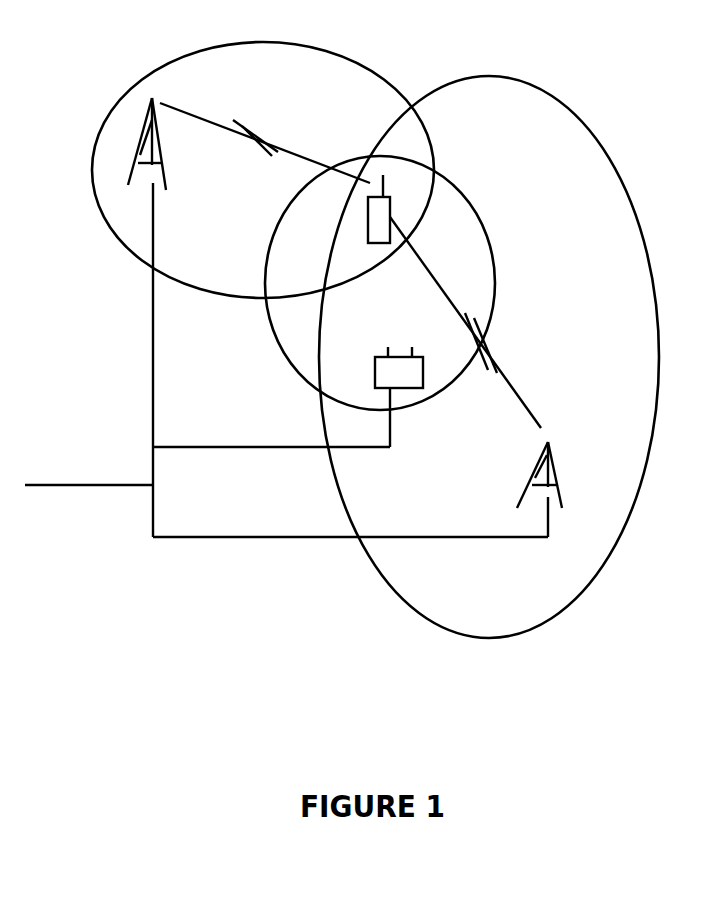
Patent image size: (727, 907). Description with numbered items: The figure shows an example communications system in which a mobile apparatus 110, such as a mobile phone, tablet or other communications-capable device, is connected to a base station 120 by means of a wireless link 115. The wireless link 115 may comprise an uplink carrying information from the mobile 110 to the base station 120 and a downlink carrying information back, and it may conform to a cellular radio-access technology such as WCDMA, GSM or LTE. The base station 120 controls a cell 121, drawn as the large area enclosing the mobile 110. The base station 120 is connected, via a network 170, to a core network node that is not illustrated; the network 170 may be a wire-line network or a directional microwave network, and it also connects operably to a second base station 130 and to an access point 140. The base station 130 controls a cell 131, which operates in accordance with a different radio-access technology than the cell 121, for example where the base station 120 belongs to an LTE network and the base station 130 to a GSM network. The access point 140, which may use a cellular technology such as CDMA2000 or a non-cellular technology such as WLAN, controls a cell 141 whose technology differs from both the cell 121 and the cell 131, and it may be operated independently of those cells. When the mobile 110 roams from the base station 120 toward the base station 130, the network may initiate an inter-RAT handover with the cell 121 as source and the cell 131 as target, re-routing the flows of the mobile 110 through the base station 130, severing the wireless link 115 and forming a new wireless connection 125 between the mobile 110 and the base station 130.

The mobile apparatus 110 is at (392, 215).
The wireless link 115 is at (265, 140).
The base station 120 is at (168, 144).
The cell 121 is at (333, 52).
The wireless connection 125 is at (465, 322).
The base station 130 is at (562, 475).
The cell 131 is at (622, 173).
The access point 140 is at (375, 368).
The cell 141 is at (277, 348).
The network 170 is at (286, 360).